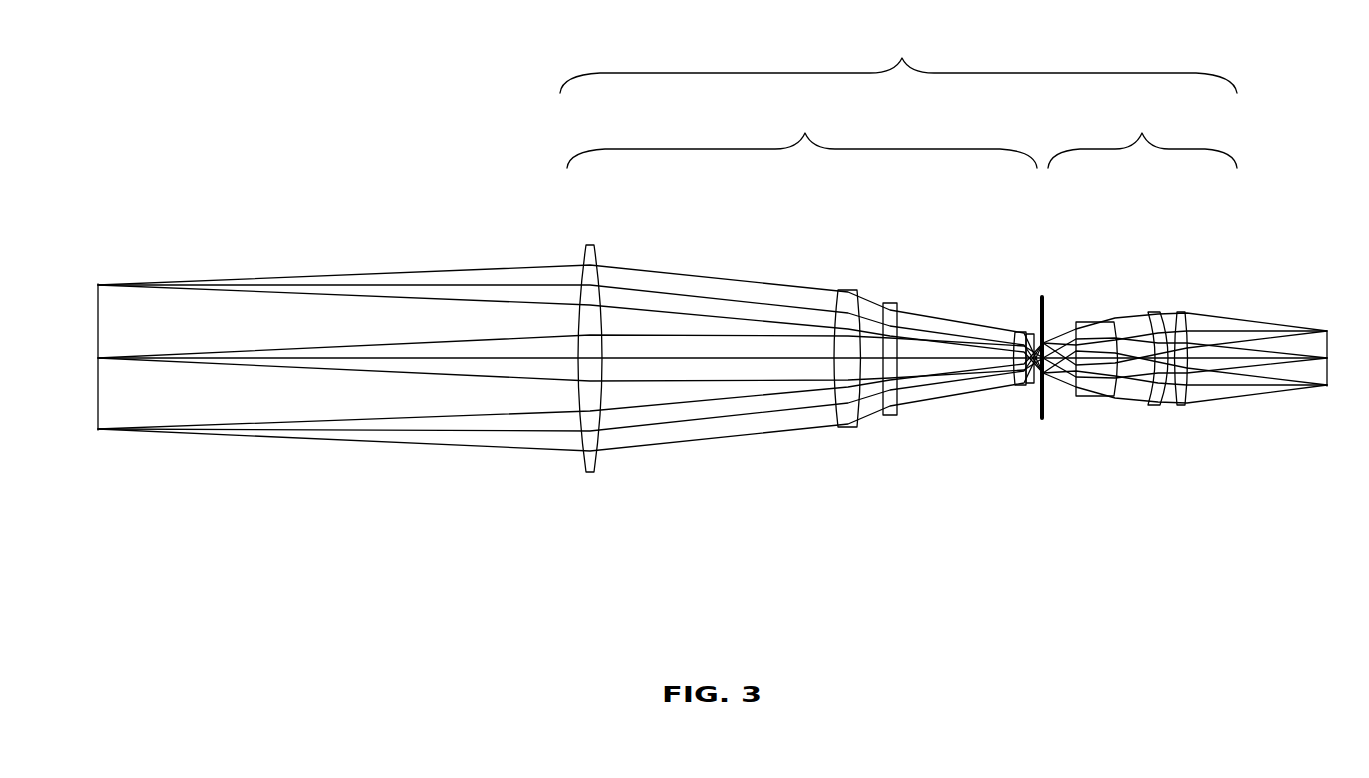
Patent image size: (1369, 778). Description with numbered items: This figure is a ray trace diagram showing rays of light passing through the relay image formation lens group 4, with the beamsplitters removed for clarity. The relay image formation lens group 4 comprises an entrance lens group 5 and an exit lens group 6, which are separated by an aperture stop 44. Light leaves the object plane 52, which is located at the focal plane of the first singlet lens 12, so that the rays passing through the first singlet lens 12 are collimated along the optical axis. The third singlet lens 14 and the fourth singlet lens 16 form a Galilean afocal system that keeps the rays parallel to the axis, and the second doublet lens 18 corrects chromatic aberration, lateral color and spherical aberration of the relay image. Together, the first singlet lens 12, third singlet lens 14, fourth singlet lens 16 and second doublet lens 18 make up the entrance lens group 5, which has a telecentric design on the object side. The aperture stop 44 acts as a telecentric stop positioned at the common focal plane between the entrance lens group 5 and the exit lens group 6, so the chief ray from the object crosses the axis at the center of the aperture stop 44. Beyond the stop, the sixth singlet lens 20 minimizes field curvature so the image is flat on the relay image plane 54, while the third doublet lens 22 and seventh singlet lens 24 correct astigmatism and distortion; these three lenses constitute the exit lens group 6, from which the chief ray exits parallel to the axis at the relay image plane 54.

The relay image formation lens group 4 is at (898, 61).
The entrance lens group 5 is at (802, 136).
The exit lens group 6 is at (1142, 136).
The first singlet lens 12 is at (587, 246).
The third singlet lens 14 is at (840, 290).
The fourth singlet lens 16 is at (887, 300).
The second doublet lens 18 is at (1020, 332).
The sixth singlet lens 20 is at (1092, 322).
The third doublet lens 22 is at (1155, 312).
The seventh singlet lens 24 is at (1186, 310).
The aperture stop 44 is at (1041, 424).
The object plane 52 is at (98, 282).
The relay image plane 54 is at (1328, 390).